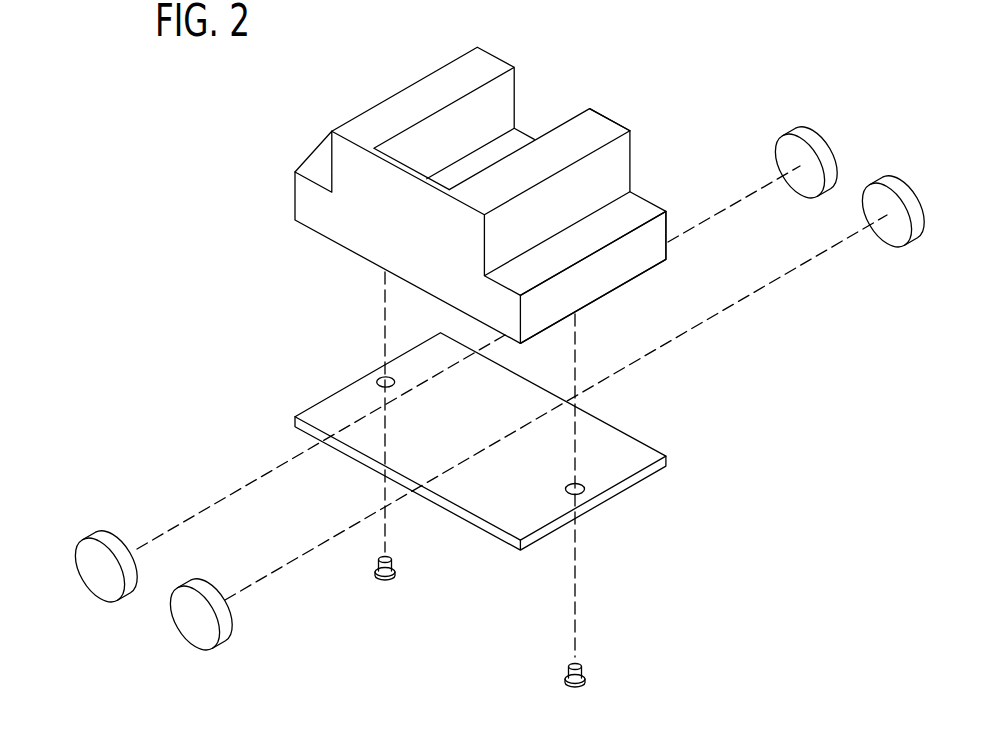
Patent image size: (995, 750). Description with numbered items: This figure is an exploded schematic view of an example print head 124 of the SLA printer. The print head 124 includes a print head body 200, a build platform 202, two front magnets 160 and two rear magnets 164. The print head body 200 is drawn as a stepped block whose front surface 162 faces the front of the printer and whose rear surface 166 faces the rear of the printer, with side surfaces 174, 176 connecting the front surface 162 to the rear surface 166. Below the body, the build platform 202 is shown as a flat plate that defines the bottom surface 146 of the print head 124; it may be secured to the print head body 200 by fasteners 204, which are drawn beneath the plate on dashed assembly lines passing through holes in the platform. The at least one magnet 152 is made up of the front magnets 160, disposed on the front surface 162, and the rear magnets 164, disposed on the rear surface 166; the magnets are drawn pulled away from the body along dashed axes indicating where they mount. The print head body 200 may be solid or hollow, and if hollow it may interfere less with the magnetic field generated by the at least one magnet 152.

The print head 124 is at (552, 40).
The front surface 162 is at (420, 240).
The side surface 174 is at (285, 182).
The print head body 200 is at (410, 85).
The rear surface 166 is at (623, 102).
The side surface 176 is at (603, 273).
The bottom surface 146 is at (631, 508).
The build platform 202 is at (627, 457).
The fasteners 204 is at (388, 582).
The magnet 152 is at (501, 394).
The front magnet 160 is at (168, 630).
The rear magnet 164 is at (873, 183).